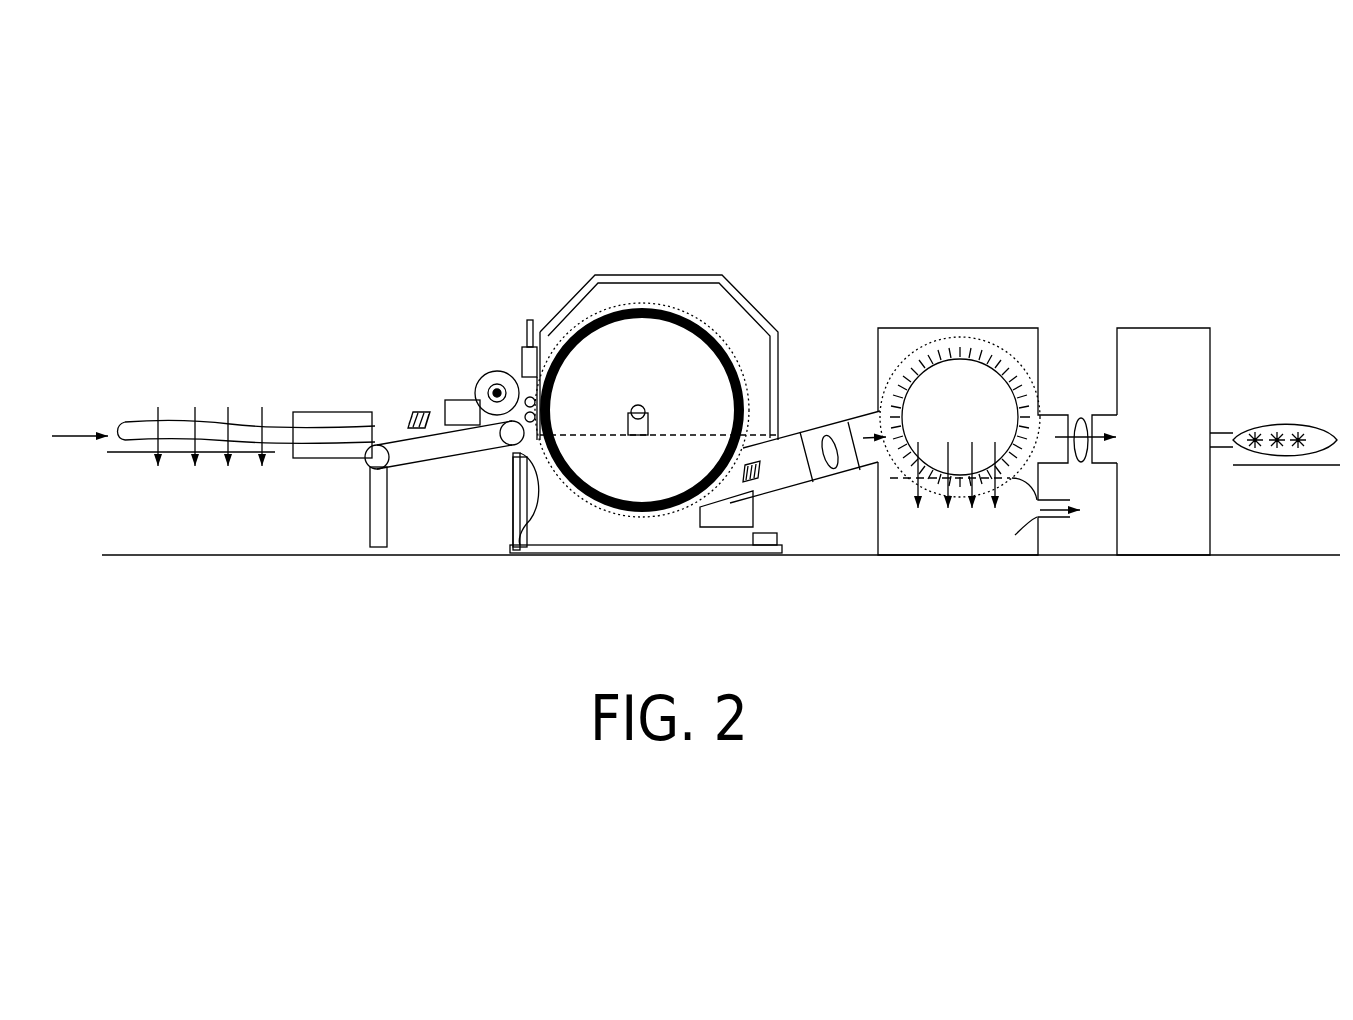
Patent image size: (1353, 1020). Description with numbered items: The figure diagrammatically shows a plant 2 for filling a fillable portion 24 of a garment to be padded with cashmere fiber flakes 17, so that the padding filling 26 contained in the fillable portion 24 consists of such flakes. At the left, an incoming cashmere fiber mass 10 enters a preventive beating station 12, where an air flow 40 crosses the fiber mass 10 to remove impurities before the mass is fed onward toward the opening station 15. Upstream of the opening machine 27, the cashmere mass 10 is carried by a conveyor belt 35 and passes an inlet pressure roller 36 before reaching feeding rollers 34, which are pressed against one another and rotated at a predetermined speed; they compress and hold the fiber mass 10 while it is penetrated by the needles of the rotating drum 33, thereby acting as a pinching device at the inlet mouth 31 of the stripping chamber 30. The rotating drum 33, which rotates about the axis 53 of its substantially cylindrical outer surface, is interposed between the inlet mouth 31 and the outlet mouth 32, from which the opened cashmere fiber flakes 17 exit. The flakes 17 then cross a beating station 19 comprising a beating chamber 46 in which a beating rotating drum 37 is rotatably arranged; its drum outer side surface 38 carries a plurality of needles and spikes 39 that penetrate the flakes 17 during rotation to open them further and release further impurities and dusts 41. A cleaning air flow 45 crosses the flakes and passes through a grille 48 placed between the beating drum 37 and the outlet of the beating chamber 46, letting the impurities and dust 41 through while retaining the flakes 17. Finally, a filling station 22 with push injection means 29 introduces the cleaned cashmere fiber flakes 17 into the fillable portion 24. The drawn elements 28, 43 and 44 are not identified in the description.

The plant 2 is at (355, 236).
The cashmere fiber mass 10 is at (128, 422).
The preventive beating station 12 is at (258, 562).
The opening station 15 is at (662, 567).
The cashmere fiber flakes 17 is at (823, 427).
The beating station 19 is at (952, 570).
The filling station 22 is at (1172, 570).
The fillable portion 24 is at (1283, 425).
The padding filling 26 is at (137, 454).
The opening machine 27 is at (760, 288).
The opener housing 28 is at (990, 311).
The push injection means 29 is at (1160, 310).
The stripping chamber 30 is at (700, 315).
The inlet mouth 31 is at (513, 540).
The outlet mouth 32 is at (803, 496).
The rotating drum 33 is at (610, 327).
The feeding rollers 34 is at (493, 367).
The conveyor belt 35 is at (398, 437).
The inlet pressure roller 36 is at (483, 380).
The beating rotating drum 37 is at (917, 352).
The drum outer side surface 38 is at (940, 350).
The needles and spikes 39 is at (1020, 350).
The air flow 40 is at (197, 405).
The impurities and dusts 41 is at (1058, 518).
The chute wall 43 is at (847, 420).
The fiber flock 44 is at (1078, 417).
The cleaning air flow 45 is at (957, 450).
The beating chamber 46 is at (903, 465).
The grille 48 is at (957, 477).
The axis 53 is at (643, 411).